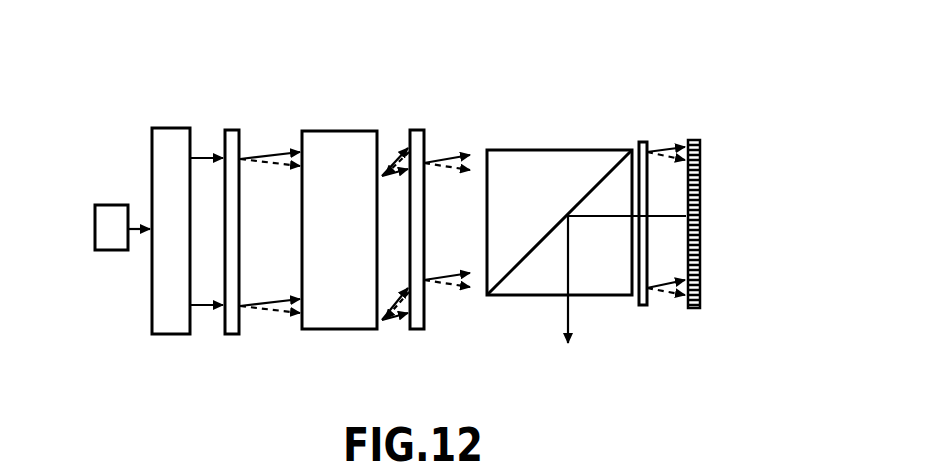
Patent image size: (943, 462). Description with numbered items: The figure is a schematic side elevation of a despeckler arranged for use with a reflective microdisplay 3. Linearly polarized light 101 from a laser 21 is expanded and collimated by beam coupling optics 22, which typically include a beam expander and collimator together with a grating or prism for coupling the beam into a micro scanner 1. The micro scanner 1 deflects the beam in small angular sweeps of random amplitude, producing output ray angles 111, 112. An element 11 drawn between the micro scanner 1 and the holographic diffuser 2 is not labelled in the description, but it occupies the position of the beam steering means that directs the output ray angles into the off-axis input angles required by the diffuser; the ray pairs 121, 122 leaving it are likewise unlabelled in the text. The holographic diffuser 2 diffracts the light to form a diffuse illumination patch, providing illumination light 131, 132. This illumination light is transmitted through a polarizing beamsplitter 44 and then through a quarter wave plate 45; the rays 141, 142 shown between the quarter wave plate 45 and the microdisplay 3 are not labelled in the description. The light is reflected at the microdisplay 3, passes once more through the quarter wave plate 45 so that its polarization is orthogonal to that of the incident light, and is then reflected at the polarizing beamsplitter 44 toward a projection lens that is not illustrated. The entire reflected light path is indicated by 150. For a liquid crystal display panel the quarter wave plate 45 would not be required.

The laser 21 is at (125, 252).
The laser light 101 is at (164, 123).
The beam coupling optics 22 is at (170, 127).
The micro scanner 1 is at (233, 337).
The output ray angle 111 is at (300, 159).
The output ray angle 112 is at (300, 179).
The optical element 11 is at (350, 331).
The first light beam 121 is at (431, 165).
The second light beam 122 is at (433, 181).
The holographic diffuser 2 is at (418, 333).
The illumination light 131 is at (479, 176).
The illumination light 132 is at (479, 196).
The polarizing beamsplitter 44 is at (557, 148).
The reflected light path 150 is at (565, 310).
The quarter wave plate 45 is at (645, 308).
The first output light beam 141 is at (702, 178).
The second output light beam 142 is at (702, 200).
The microdisplay 3 is at (703, 290).